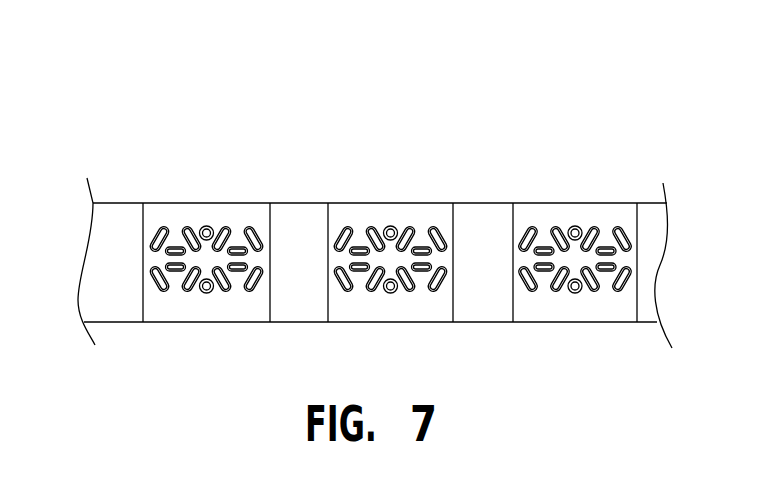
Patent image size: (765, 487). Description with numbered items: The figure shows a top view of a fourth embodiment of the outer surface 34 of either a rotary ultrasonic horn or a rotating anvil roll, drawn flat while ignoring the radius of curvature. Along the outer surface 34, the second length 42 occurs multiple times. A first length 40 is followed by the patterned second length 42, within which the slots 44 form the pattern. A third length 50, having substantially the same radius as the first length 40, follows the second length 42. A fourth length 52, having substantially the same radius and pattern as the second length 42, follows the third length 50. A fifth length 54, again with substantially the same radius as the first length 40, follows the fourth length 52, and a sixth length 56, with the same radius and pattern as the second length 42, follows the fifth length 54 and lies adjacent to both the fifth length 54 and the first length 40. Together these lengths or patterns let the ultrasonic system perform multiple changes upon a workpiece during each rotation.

The outer surface 34 is at (103, 64).
The first length 40 is at (127, 181).
The second length 42 is at (206, 252).
The slots (perforations) 44 is at (183, 293).
The third length 50 is at (297, 181).
The fourth length 52 is at (390, 182).
The fifth length 54 is at (467, 182).
The sixth length 56 is at (567, 182).